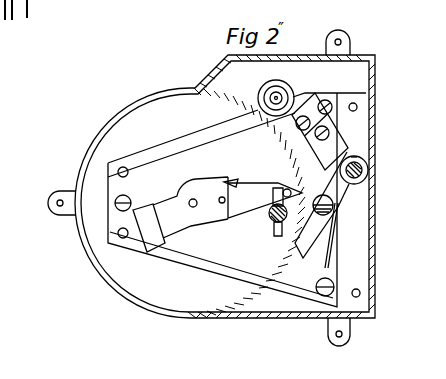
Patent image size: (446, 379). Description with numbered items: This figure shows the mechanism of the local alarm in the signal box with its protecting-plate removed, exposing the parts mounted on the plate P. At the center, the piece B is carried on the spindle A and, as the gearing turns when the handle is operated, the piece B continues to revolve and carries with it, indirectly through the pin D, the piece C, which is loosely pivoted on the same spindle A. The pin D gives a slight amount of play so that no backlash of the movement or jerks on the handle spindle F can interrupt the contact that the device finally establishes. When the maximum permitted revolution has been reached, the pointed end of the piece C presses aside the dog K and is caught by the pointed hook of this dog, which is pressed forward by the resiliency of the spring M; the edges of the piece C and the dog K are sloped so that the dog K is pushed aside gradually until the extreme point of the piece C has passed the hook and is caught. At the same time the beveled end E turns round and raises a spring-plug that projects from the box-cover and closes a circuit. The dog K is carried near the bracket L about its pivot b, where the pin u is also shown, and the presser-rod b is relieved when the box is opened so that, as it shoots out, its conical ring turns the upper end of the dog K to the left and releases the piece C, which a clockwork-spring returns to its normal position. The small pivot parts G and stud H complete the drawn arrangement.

The spindle A is at (195, 207).
The piece B is at (201, 202).
The piece C is at (260, 200).
The pin D is at (234, 175).
The beveled end E is at (149, 228).
The spindle F is at (287, 216).
The guide block G is at (275, 188).
The stud H is at (289, 191).
The dog K is at (322, 205).
The bracket L is at (312, 138).
The spring M is at (335, 250).
The plate P is at (237, 193).
The presser-rod b is at (354, 178).
The pin u is at (353, 160).